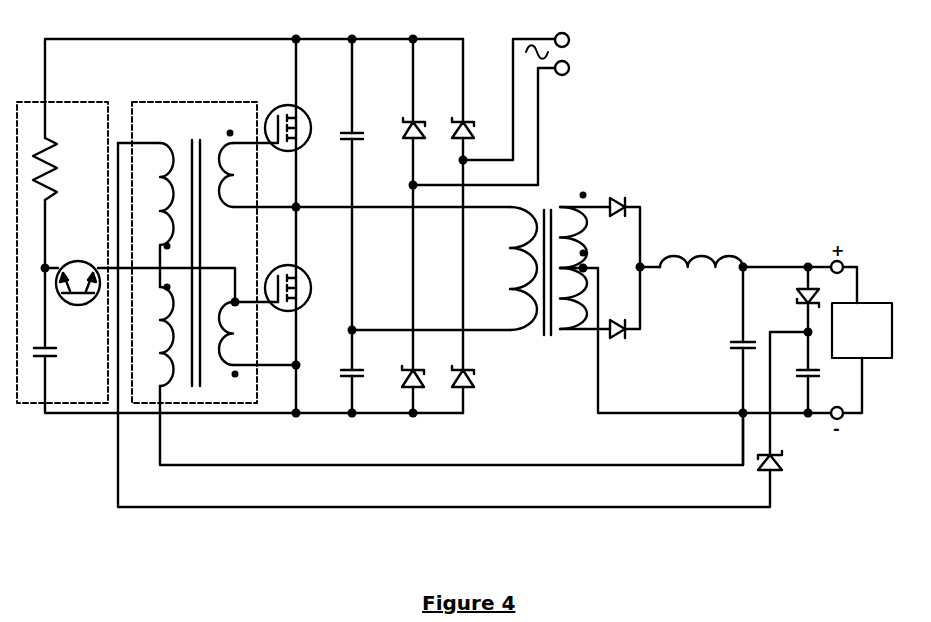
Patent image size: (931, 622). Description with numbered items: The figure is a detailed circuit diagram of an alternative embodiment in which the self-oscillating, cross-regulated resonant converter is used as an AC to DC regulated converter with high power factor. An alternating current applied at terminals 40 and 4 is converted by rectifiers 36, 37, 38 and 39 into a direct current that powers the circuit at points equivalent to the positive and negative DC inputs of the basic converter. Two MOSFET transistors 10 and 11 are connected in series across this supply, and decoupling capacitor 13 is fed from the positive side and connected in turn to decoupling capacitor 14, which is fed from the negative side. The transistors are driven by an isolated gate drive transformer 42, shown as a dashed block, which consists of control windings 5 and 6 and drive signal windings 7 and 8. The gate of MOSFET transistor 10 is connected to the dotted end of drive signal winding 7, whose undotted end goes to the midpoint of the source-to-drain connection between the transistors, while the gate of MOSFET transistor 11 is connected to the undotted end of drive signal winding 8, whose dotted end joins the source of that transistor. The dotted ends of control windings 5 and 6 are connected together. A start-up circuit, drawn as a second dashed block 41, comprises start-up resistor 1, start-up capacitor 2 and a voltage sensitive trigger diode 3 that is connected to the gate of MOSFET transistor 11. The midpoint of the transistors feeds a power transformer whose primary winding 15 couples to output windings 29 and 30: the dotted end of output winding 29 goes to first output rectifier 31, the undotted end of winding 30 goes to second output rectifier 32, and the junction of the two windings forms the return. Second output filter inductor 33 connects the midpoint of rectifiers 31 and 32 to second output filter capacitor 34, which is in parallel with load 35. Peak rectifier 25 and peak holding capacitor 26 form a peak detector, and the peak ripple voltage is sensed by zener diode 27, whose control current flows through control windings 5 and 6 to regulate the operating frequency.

The start-up resistor 1 is at (48, 140).
The start-up capacitor 2 is at (47, 350).
The voltage sensitive trigger diode 3 is at (82, 261).
The terminal 4 is at (569, 72).
The control winding 5 is at (166, 165).
The control winding 6 is at (164, 360).
The drive signal winding 7 is at (228, 203).
The drive signal winding 8 is at (226, 340).
The MOSFET transistor 10 is at (306, 118).
The MOSFET transistor 11 is at (306, 280).
The decoupling capacitor 13 is at (356, 140).
The decoupling capacitor 14 is at (348, 370).
The transformer primary winding 15 is at (512, 262).
The peak rectifier 25 is at (797, 298).
The peak holding capacitor 26 is at (814, 376).
The zener diode 27 is at (786, 462).
The output winding 29 is at (578, 196).
The output winding 30 is at (568, 331).
The first output rectifier 31 is at (622, 200).
The second output rectifier 32 is at (624, 337).
The second output filter inductor 33 is at (692, 246).
The second output filter capacitor 34 is at (735, 346).
The load 35 is at (860, 303).
The rectifier 36 is at (420, 122).
The rectifier 37 is at (404, 375).
The rectifier 38 is at (470, 122).
The rectifier 39 is at (470, 385).
The terminal 40 is at (569, 36).
The trigger oscillator circuit 41 is at (65, 102).
The isolated gate drive transformer 42 is at (178, 102).